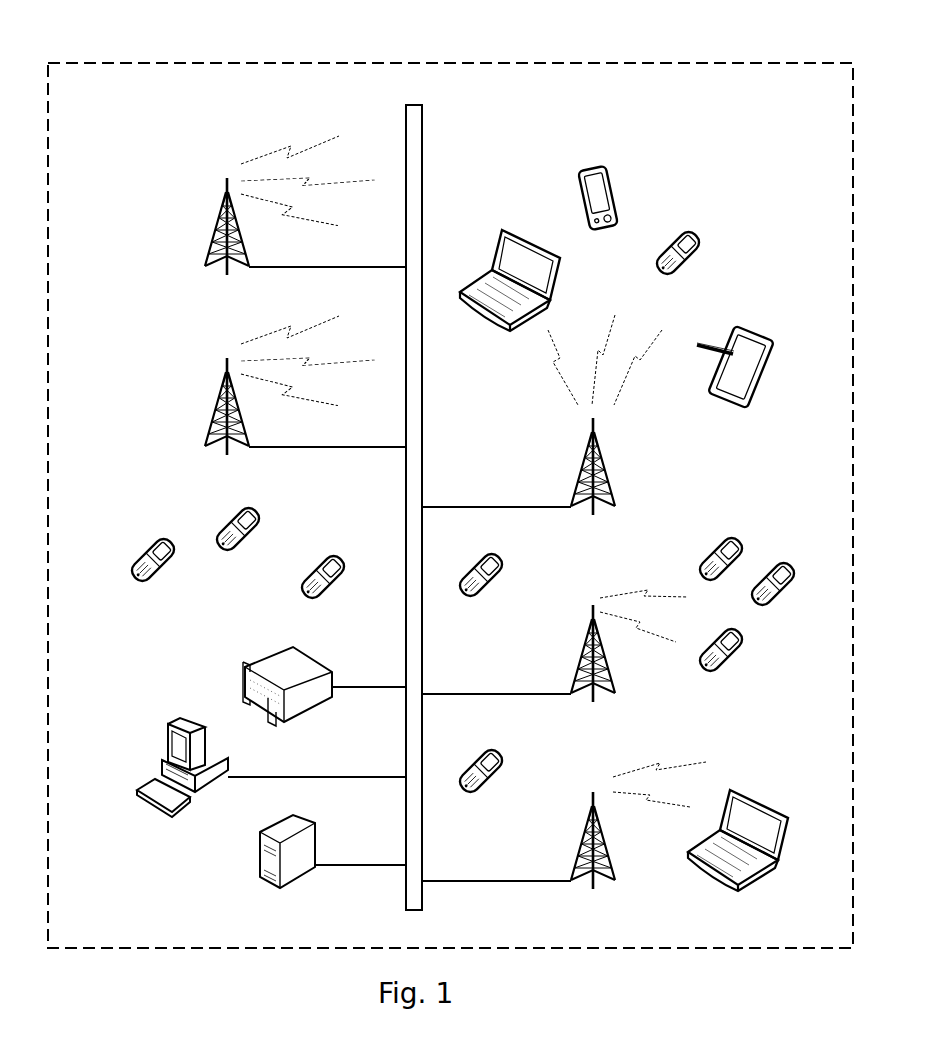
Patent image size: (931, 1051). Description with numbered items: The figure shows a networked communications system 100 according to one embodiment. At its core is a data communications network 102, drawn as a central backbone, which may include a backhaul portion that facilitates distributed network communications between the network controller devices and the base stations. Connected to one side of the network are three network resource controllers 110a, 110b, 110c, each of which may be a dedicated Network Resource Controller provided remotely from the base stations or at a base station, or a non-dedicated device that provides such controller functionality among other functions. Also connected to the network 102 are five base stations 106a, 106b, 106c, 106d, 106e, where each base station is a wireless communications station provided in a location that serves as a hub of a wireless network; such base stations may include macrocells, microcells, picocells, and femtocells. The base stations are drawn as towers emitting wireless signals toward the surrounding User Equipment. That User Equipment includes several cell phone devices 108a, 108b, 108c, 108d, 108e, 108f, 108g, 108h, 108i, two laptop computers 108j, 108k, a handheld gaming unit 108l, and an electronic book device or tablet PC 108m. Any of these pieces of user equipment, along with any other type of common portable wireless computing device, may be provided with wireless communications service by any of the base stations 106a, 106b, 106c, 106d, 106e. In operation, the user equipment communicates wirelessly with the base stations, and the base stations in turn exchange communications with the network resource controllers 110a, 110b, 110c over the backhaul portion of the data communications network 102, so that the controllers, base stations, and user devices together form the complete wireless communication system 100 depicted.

The networked communications system 100 is at (316, 37).
The data communications network 102 is at (406, 120).
The base station 106a is at (219, 226).
The base station 106b is at (219, 406).
The base station 106c is at (583, 832).
The base station 106d is at (585, 652).
The base station 106e is at (610, 479).
The cell phone device 108a is at (140, 556).
The cell phone device 108b is at (232, 515).
The cell phone device 108c is at (302, 600).
The cell phone device 108d is at (505, 754).
The cell phone device 108e is at (736, 667).
The cell phone device 108f is at (790, 598).
The cell phone device 108g is at (745, 538).
The cell phone device 108h is at (505, 557).
The cell phone device 108i is at (707, 239).
The laptop computer 108j is at (757, 800).
The laptop computer 108k is at (502, 228).
The handheld gaming unit 108l is at (617, 190).
The electronic book device or tablet PC 108m is at (758, 333).
The network resource controller 110a is at (243, 686).
The network resource controller 110b is at (168, 726).
The network resource controller 110c is at (260, 869).